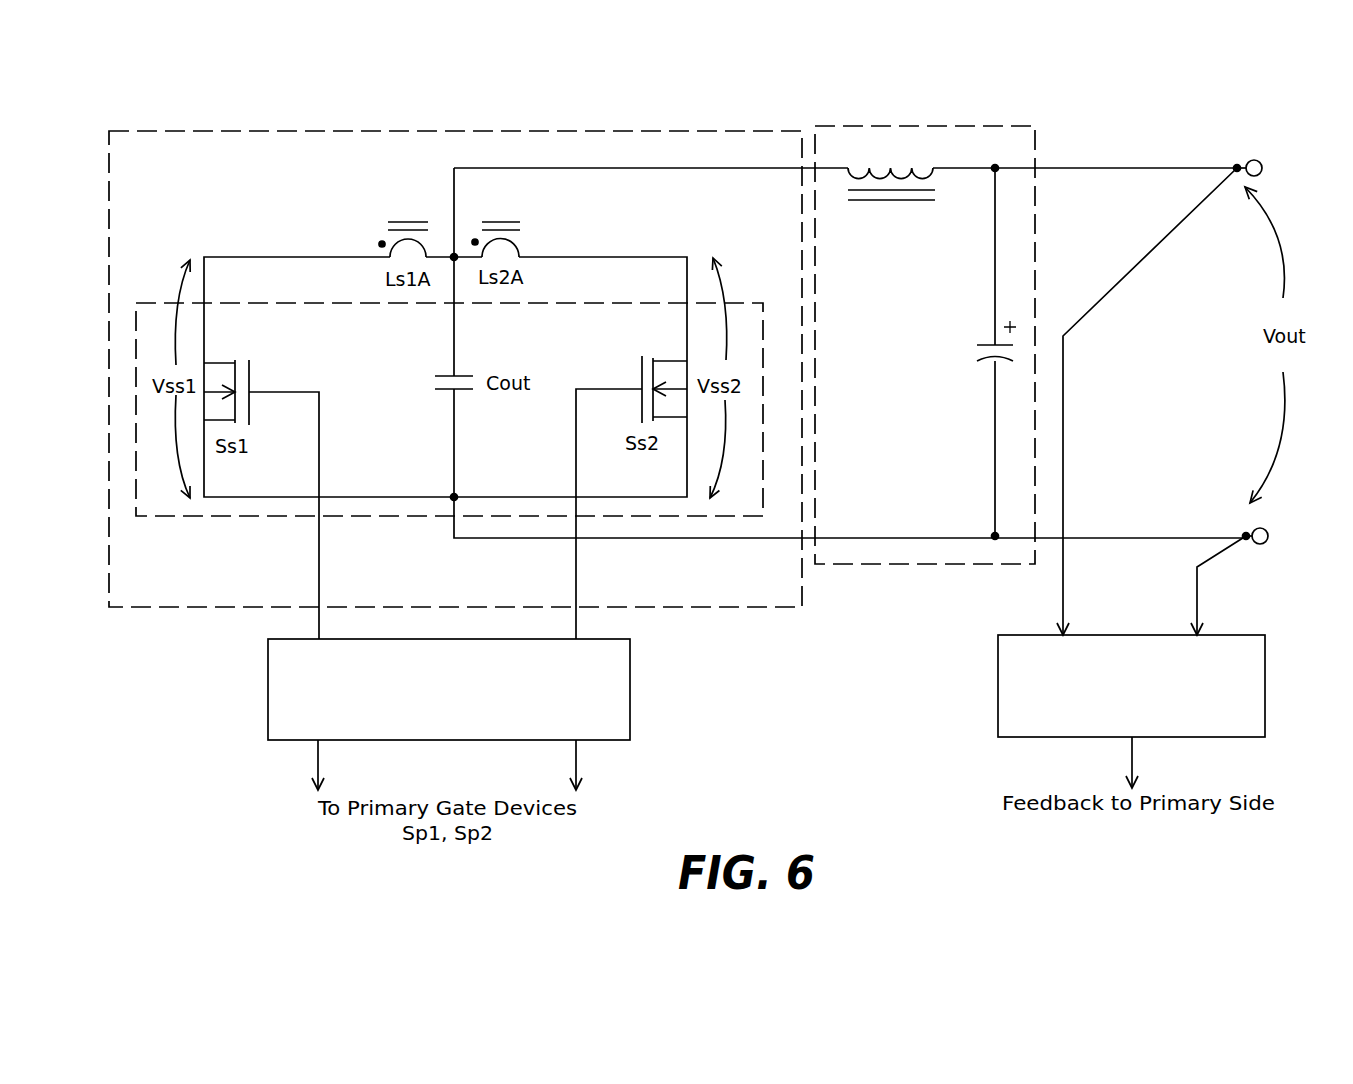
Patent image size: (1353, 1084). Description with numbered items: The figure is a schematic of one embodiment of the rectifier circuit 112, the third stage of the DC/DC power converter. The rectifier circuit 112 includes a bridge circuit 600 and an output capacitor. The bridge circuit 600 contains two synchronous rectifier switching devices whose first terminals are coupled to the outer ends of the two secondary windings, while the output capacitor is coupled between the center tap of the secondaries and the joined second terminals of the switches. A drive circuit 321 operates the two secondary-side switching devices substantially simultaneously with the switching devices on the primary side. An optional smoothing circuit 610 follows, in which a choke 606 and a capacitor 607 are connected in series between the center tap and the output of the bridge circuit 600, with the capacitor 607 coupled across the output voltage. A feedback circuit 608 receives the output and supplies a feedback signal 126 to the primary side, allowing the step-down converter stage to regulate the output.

The rectifier circuit 112 is at (690, 607).
The bridge circuit 600 is at (263, 518).
The choke (inductor) 606 is at (927, 202).
The capacitor 607 is at (985, 343).
The smoothing circuit 610 is at (917, 564).
The drive circuit 321 is at (630, 740).
The feedback circuit 608 is at (998, 737).
The feedback signal to primary side 126 is at (1133, 753).